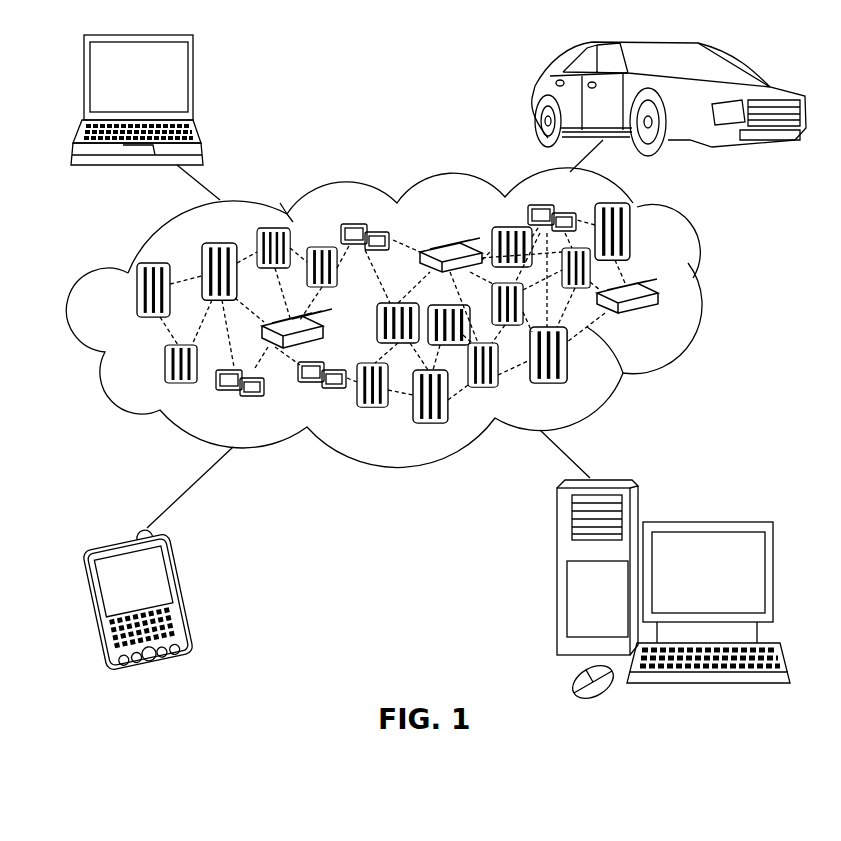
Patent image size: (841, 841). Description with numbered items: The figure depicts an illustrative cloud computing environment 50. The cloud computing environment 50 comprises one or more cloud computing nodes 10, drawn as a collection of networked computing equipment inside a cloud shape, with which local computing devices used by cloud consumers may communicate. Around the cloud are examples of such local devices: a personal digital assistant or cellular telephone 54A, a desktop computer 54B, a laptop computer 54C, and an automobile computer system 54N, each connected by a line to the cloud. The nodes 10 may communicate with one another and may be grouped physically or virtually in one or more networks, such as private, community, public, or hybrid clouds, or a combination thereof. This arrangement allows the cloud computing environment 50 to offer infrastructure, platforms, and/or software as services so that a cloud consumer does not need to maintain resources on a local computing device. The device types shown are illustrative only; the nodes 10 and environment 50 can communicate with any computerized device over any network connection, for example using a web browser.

The cloud computing node 10 is at (436, 370).
The cloud computing environment 50 is at (707, 297).
The personal digital assistant or cellular telephone 54A is at (183, 595).
The desktop computer 54B is at (703, 522).
The laptop computer 54C is at (195, 80).
The automobile computer system 54N is at (535, 100).